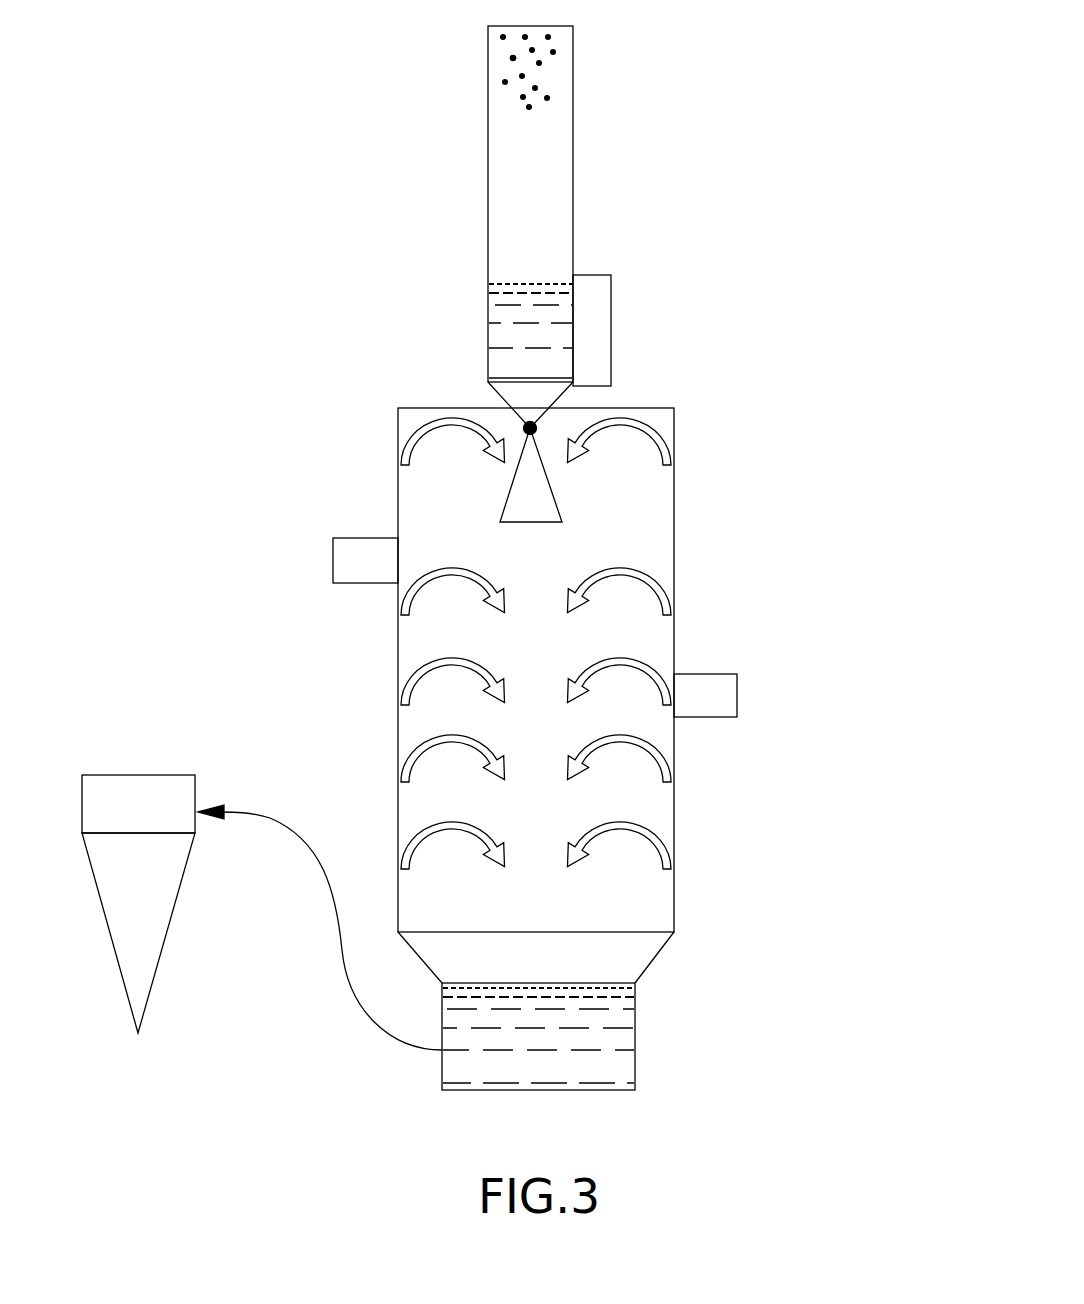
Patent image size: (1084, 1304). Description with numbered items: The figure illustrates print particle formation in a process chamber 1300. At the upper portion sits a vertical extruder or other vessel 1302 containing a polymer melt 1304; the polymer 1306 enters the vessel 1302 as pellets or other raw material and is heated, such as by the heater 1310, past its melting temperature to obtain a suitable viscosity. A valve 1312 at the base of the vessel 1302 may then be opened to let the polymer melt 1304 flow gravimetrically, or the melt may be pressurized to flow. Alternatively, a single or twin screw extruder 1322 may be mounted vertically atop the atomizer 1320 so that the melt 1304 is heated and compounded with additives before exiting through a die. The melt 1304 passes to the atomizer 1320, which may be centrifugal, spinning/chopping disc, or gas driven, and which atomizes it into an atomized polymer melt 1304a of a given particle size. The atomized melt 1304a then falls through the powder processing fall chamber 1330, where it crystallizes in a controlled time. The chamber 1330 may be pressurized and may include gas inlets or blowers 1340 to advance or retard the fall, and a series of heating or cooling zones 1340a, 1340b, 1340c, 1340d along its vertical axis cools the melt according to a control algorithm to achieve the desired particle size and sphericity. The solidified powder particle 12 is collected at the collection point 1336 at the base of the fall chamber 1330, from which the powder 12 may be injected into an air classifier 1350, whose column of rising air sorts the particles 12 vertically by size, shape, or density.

The process chamber 1300 is at (293, 140).
The vessel 1302 is at (573, 240).
The polymer melt 1304 is at (512, 332).
The atomized polymer melt 1304a is at (522, 481).
The polymer 1306 is at (548, 79).
The heater 1310 is at (611, 322).
The valve 1312 is at (553, 408).
The atomizer 1320 is at (526, 428).
The screw extruder 1322 is at (487, 281).
The fall chamber 1330 is at (674, 532).
The collection point 1336 is at (635, 1023).
The gas inlet 1340 is at (330, 553).
The heating or cooling zone 1340a is at (674, 452).
The heating or cooling zone 1340b is at (674, 603).
The heating or cooling zone 1340c is at (398, 693).
The heating or cooling zone 1340d is at (668, 845).
The air classifier 1350 is at (170, 925).
The print particle 12 is at (635, 1080).